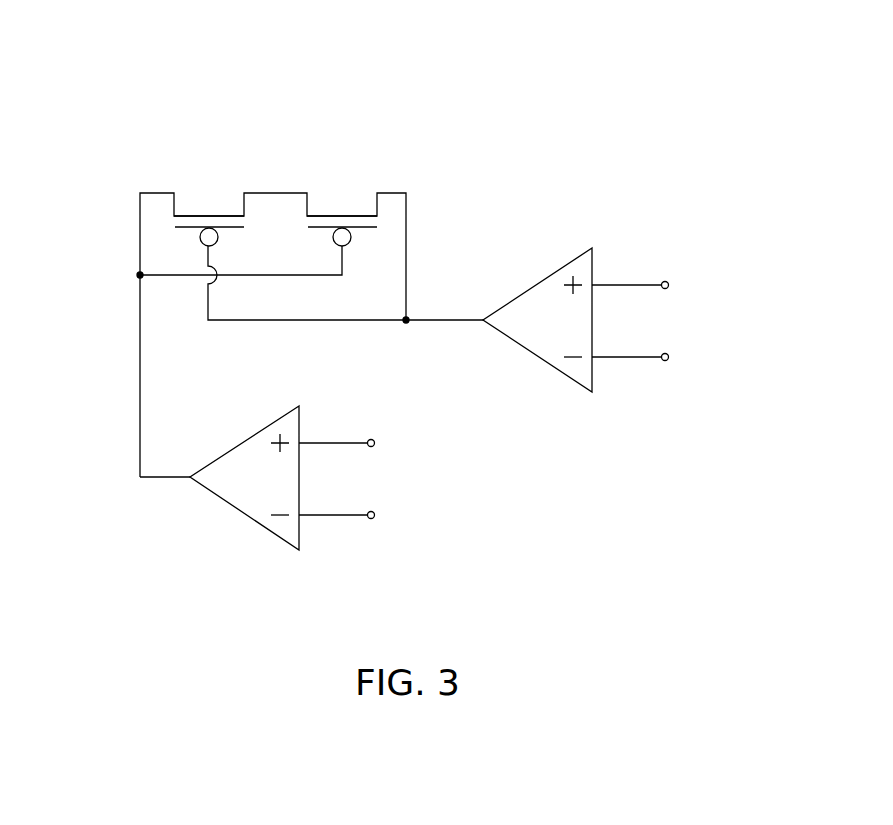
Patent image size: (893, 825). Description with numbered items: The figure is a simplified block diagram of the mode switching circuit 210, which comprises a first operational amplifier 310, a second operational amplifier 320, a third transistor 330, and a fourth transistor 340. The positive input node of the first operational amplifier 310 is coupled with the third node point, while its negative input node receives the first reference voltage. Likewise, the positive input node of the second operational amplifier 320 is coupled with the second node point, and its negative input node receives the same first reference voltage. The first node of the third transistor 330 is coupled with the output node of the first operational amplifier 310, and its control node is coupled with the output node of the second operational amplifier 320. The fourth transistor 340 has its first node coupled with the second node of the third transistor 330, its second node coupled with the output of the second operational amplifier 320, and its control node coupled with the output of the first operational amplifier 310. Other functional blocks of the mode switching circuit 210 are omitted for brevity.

The mode switching circuit 210 is at (95, 65).
The first operational amplifier 310 is at (257, 489).
The second operational amplifier 320 is at (548, 331).
The third transistor 330 is at (210, 215).
The fourth transistor 340 is at (340, 215).